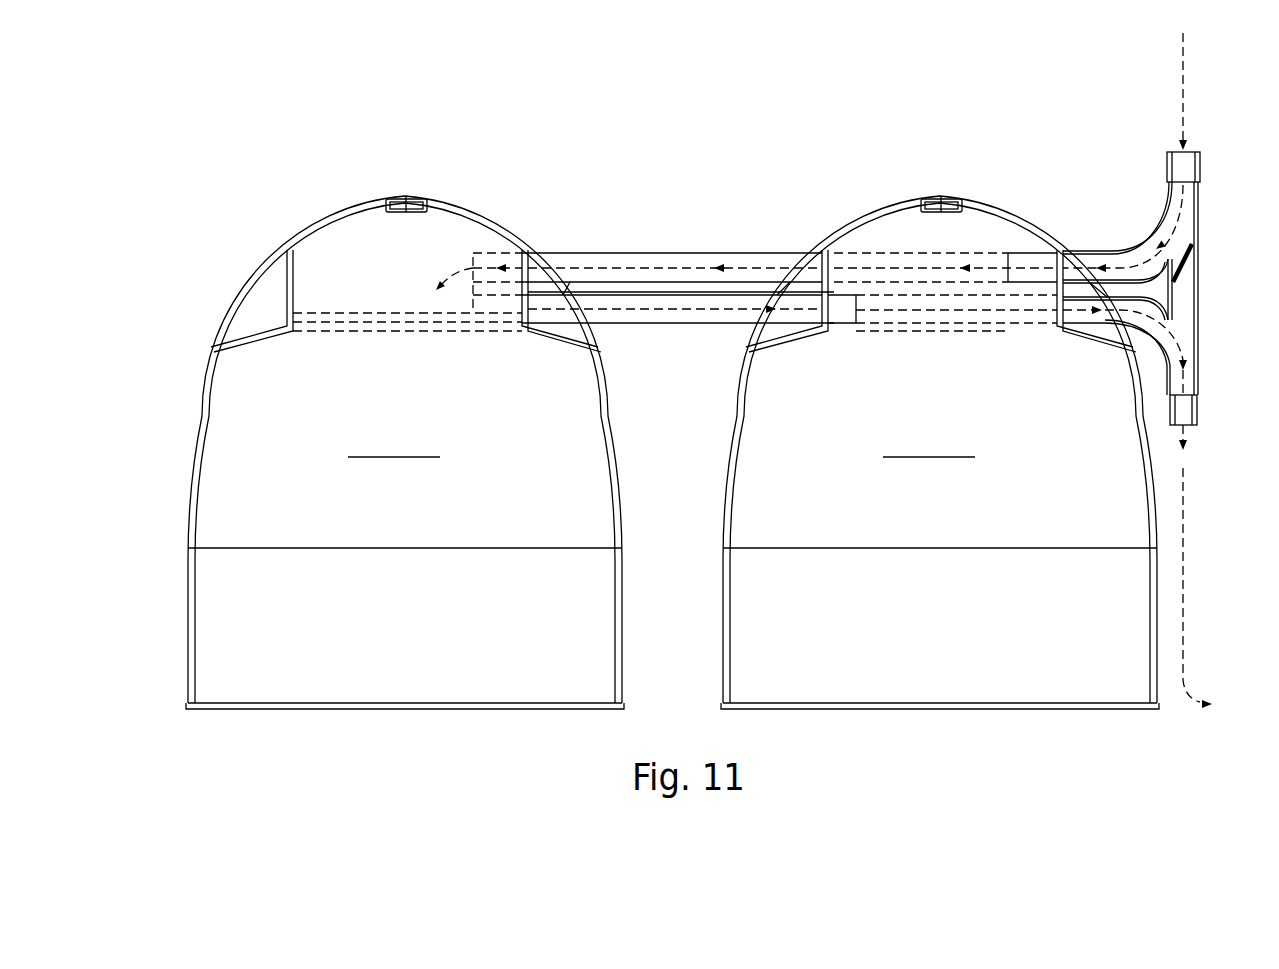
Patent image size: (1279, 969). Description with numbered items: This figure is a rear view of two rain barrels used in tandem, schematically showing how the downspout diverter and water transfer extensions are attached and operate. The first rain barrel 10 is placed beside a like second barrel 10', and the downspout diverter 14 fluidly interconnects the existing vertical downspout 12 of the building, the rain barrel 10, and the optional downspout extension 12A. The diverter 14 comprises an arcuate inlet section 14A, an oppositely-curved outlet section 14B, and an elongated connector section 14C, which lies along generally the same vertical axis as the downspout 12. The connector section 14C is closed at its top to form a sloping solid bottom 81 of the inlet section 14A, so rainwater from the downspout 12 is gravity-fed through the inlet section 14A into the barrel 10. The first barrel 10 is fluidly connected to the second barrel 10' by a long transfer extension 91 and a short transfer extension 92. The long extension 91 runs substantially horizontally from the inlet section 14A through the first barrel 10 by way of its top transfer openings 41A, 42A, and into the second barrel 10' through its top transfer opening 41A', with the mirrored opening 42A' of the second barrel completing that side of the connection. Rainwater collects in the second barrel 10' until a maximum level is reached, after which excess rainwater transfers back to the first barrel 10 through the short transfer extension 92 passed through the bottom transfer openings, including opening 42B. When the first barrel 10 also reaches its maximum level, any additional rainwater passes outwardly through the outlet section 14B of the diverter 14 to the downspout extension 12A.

The rain barrel 10 is at (940, 415).
The second rain barrel 10' is at (405, 418).
The downspout 12 is at (1183, 98).
The downspout extension 12A is at (1182, 577).
The downspout diverter 14 is at (1216, 194).
The inlet section 14A is at (1150, 240).
The outlet section 14B is at (1130, 348).
The connector section 14C is at (1182, 310).
The sloping solid bottom 81 is at (1197, 256).
The long transfer extension 91 is at (702, 253).
The short transfer extension 92 is at (660, 325).
The top transfer opening 41A is at (945, 226).
The top transfer opening 41A' is at (498, 215).
The top transfer opening 42A is at (901, 236).
The transfer opening 42A' is at (525, 340).
The bottom transfer opening 42B is at (833, 325).